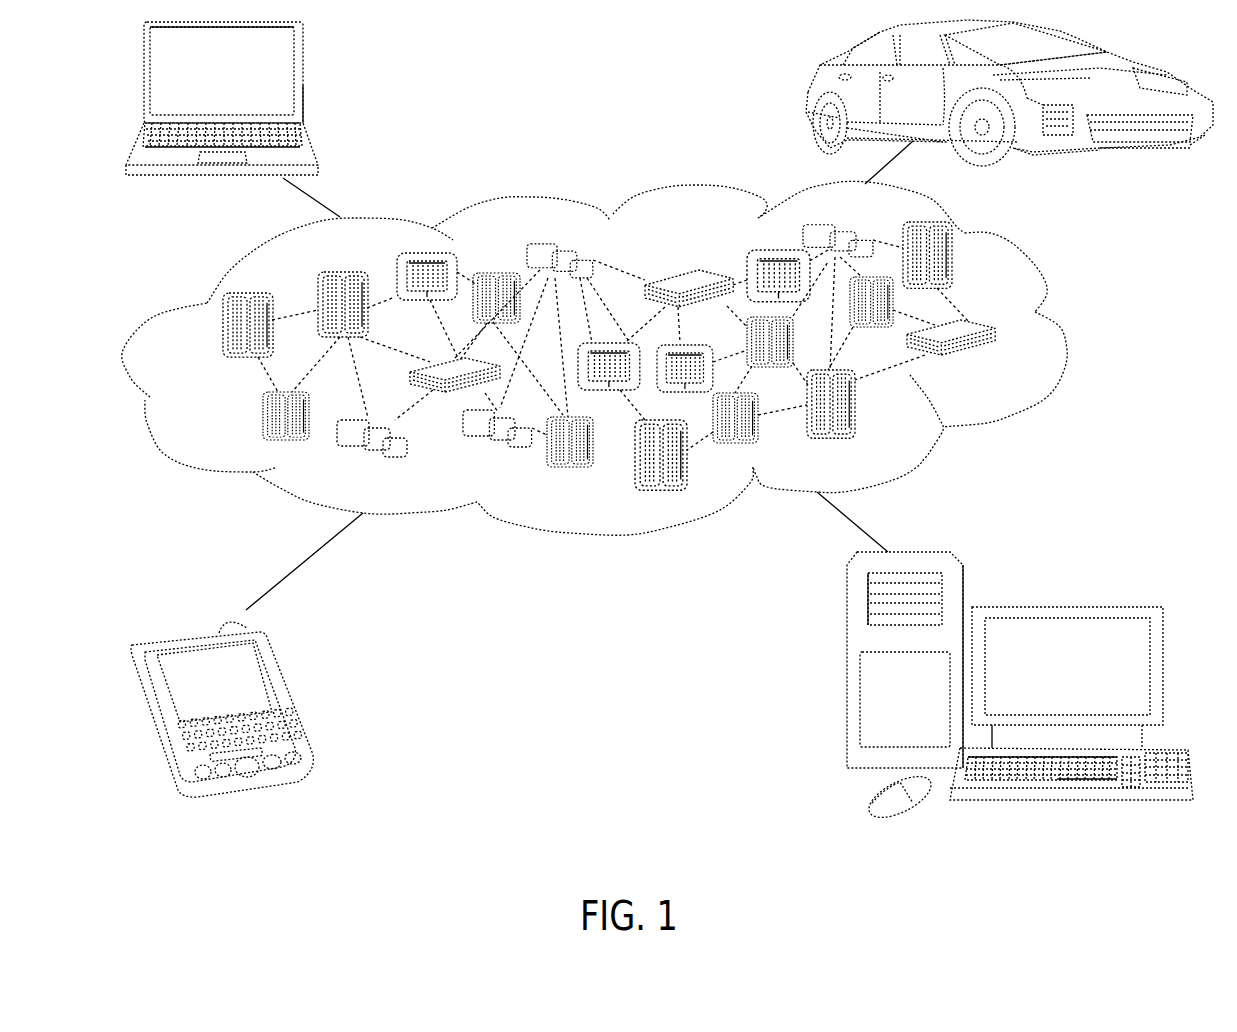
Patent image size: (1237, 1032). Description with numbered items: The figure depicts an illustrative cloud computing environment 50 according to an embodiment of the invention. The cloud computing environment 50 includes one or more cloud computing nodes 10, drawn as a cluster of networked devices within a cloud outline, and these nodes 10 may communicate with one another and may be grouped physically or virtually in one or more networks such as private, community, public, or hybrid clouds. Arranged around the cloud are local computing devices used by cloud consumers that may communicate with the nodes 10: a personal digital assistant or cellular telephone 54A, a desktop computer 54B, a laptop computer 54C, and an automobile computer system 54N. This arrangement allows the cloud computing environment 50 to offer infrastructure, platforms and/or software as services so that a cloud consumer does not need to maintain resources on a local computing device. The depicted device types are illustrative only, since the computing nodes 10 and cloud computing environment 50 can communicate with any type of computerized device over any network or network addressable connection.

The cloud computing nodes 10 is at (997, 362).
The cloud computing environment 50 is at (1068, 336).
The personal digital assistant (PDA) or cellular telephone 54A is at (288, 690).
The desktop computer 54B is at (1065, 605).
The laptop computer 54C is at (304, 78).
The automobile computer system 54N is at (806, 92).